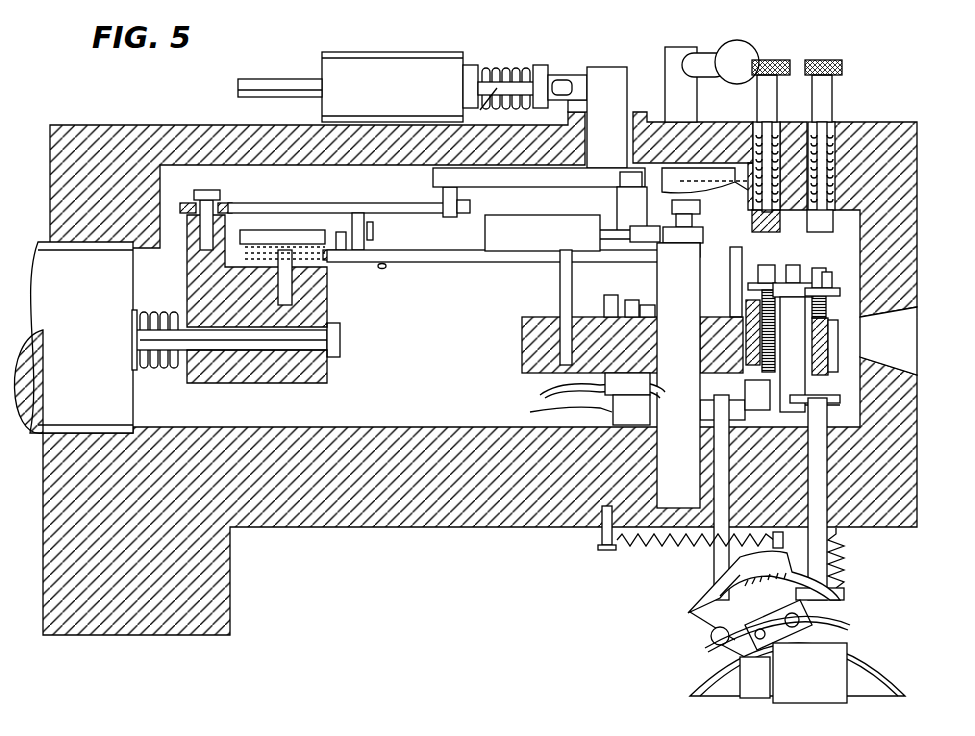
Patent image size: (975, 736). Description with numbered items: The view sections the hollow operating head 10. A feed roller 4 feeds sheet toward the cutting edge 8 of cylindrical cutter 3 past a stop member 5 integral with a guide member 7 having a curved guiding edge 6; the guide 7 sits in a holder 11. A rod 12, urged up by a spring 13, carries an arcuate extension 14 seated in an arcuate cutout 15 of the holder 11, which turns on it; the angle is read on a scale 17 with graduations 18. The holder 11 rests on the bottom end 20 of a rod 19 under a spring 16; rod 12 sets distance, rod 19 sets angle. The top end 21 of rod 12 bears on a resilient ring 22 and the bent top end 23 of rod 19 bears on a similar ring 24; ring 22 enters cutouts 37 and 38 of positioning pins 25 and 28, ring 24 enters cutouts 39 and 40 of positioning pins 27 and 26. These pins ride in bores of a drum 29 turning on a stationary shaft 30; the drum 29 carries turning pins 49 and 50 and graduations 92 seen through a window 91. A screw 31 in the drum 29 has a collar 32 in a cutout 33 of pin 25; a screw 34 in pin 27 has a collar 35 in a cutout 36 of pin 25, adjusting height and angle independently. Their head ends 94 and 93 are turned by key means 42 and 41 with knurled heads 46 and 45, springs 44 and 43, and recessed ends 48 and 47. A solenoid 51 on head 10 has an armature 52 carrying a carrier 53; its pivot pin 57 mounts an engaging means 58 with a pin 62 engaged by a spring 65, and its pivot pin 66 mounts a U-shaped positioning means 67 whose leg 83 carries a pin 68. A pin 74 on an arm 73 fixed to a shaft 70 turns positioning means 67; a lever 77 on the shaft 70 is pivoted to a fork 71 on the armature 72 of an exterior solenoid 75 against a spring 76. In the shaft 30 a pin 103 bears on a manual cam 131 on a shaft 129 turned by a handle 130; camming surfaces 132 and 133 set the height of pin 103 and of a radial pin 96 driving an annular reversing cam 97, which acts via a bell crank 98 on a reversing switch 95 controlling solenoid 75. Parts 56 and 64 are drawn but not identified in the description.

The base plate 3 is at (700, 686).
The support block 4 is at (760, 705).
The pivot block 5 is at (775, 648).
The arcuate guide 6 is at (830, 633).
The pivot link 7 is at (812, 618).
The arcuate surface 8 is at (705, 663).
The housing 10 is at (905, 408).
The link arm 11 is at (712, 650).
The spring anchor pin 12 is at (800, 532).
The tension spring 13 is at (845, 572).
The foot plate 14 is at (844, 600).
The lever arm 15 is at (690, 612).
The return spring 16 is at (690, 545).
The sector segment 17 is at (735, 582).
The pawl 18 is at (738, 574).
The actuating rod 19 is at (712, 412).
The roller 20 is at (710, 637).
The connecting rod 21 is at (827, 410).
The pin 22 is at (850, 396).
The guide block 23 is at (725, 400).
The lever 24 is at (610, 382).
The threaded sleeve 25 is at (826, 308).
The stop 26 is at (615, 298).
The plunger 27 is at (790, 380).
The stop pin 28 is at (647, 305).
The bearing block 29 is at (525, 360).
The slide bar 30 is at (660, 455).
The bushing 31 is at (828, 335).
The washer 32 is at (848, 290).
The nut 33 is at (812, 268).
The bushing 34 is at (746, 307).
The threaded stud 35 is at (748, 290).
The washer 36 is at (752, 283).
The plate 37 is at (830, 395).
The spring finger 38 is at (560, 412).
The guide 39 is at (758, 402).
The slide bar 40 is at (650, 372).
The adjusting rod 41 is at (760, 88).
The adjusting rod 42 is at (832, 95).
The compression spring 43 is at (755, 142).
The compression spring 44 is at (838, 140).
The knurled head 45 is at (790, 62).
The knurled head 46 is at (842, 63).
The stop nut 47 is at (780, 225).
The stop nut 48 is at (833, 222).
The post 49 is at (560, 287).
The bar 50 is at (732, 258).
The drive shaft 51 is at (120, 405).
The spindle 52 is at (340, 340).
The bearing housing 53 is at (325, 372).
The coil spring 56 is at (150, 315).
The pin 57 is at (292, 298).
The slide plate 58 is at (440, 258).
The bracket 62 is at (356, 214).
The pin 64 is at (382, 268).
The stop 65 is at (340, 232).
The screw 66 is at (220, 192).
The lock washer 67 is at (186, 202).
The pin 68 is at (373, 231).
The upright 70 is at (605, 70).
The foot 71 is at (565, 106).
The shaft 72 is at (492, 104).
The cross bar 73 is at (500, 190).
The stop block 74 is at (443, 194).
The solenoid 75 is at (365, 55).
The spring 76 is at (510, 70).
The coupling 77 is at (575, 72).
The slide rod 83 is at (285, 205).
The opening 91 is at (895, 356).
The stub 92 is at (838, 355).
The adjusting screw 93 is at (782, 258).
The screw 94 is at (832, 275).
The block 95 is at (530, 228).
The link 96 is at (672, 248).
The head 97 is at (703, 235).
The rod 98 is at (585, 228).
The cam follower 103 is at (720, 206).
The arm 129 is at (665, 60).
The knob 130 is at (743, 50).
The cam plate 131 is at (690, 178).
The bar end 132 is at (655, 180).
The cam edge 133 is at (730, 180).